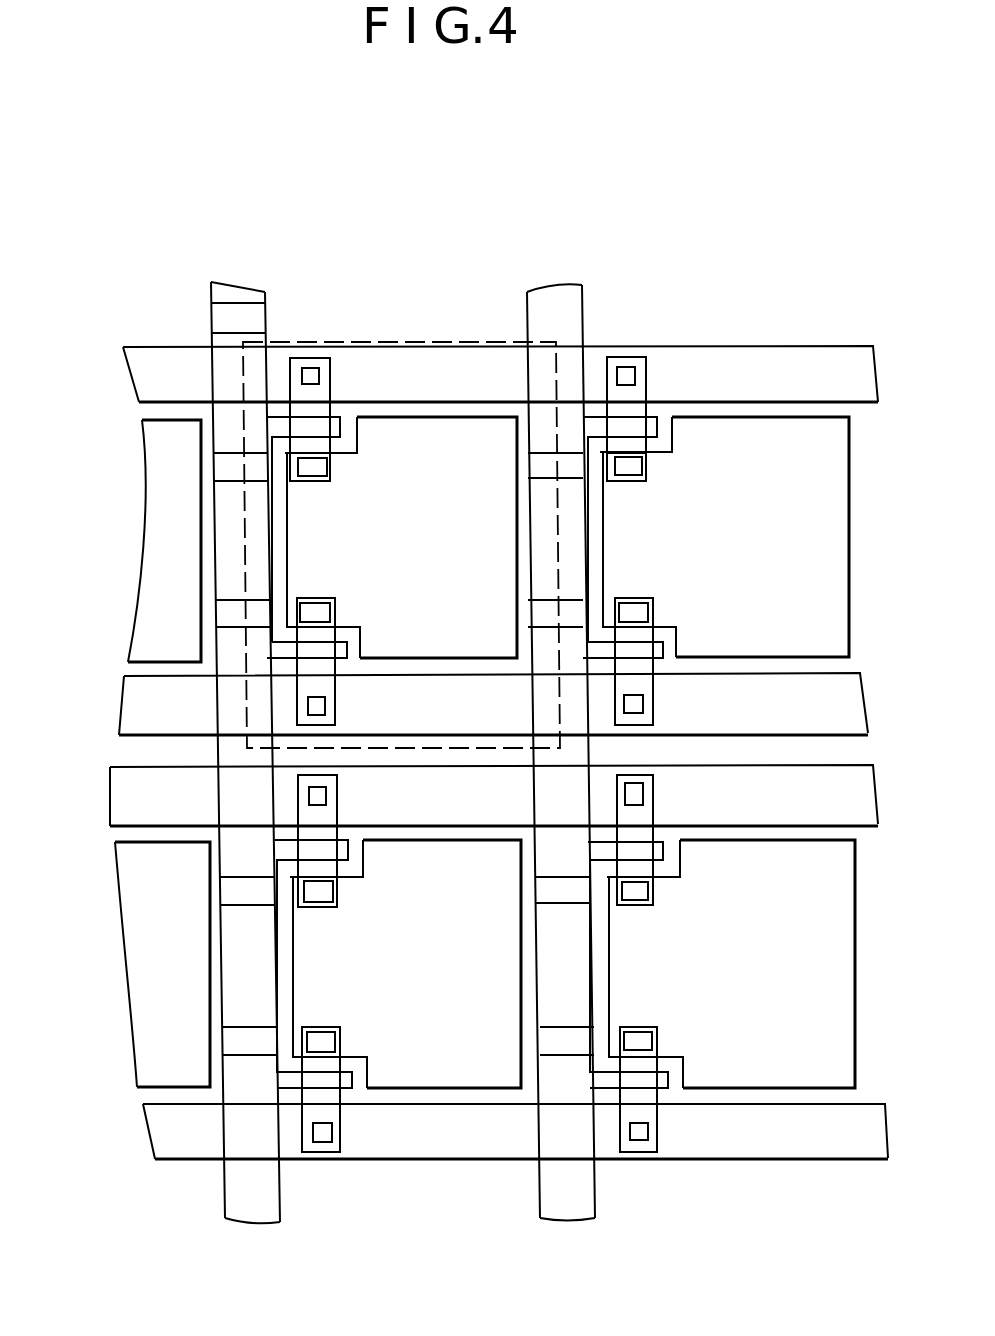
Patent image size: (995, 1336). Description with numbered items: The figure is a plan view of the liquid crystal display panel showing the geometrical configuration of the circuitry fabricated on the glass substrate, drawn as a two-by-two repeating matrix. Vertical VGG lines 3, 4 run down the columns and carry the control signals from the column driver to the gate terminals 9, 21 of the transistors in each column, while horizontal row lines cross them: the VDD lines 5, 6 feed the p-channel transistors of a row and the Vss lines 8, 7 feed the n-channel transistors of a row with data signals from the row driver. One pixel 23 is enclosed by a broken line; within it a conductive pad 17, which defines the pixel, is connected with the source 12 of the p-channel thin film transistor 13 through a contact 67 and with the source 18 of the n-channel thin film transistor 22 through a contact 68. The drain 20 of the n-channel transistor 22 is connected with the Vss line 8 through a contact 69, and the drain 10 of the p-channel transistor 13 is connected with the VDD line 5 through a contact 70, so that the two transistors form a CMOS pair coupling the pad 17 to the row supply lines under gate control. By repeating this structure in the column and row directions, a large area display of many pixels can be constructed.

The VGG line 3 is at (252, 292).
The VGG line 4 is at (573, 332).
The VDD line 5 is at (152, 347).
The VDD line 6 is at (130, 793).
The Vss line 7 is at (196, 1150).
The Vss line 8 is at (126, 706).
The gate terminal 9 is at (320, 430).
The drain 10 is at (323, 412).
The source 12 is at (320, 445).
The p-channel thin film transistor 13 is at (412, 433).
The conductive pad 17 is at (463, 425).
The source 18 is at (325, 633).
The drain 20 is at (327, 667).
The gate terminal 21 is at (328, 652).
The n-channel thin film transistor 22 is at (412, 568).
The pixel 23 is at (378, 342).
The contact 67 is at (315, 470).
The contact 68 is at (312, 612).
The contact 69 is at (325, 705).
The contact 70 is at (313, 368).